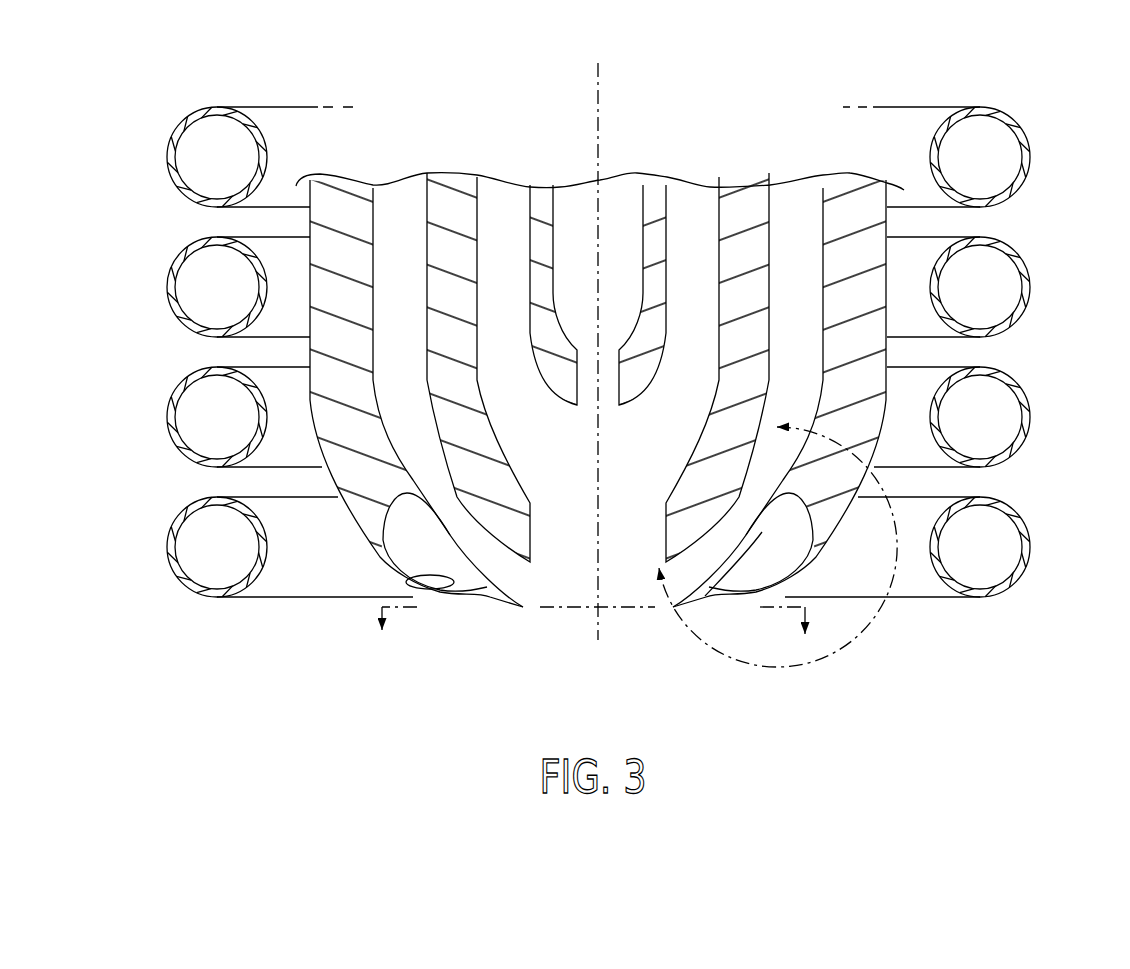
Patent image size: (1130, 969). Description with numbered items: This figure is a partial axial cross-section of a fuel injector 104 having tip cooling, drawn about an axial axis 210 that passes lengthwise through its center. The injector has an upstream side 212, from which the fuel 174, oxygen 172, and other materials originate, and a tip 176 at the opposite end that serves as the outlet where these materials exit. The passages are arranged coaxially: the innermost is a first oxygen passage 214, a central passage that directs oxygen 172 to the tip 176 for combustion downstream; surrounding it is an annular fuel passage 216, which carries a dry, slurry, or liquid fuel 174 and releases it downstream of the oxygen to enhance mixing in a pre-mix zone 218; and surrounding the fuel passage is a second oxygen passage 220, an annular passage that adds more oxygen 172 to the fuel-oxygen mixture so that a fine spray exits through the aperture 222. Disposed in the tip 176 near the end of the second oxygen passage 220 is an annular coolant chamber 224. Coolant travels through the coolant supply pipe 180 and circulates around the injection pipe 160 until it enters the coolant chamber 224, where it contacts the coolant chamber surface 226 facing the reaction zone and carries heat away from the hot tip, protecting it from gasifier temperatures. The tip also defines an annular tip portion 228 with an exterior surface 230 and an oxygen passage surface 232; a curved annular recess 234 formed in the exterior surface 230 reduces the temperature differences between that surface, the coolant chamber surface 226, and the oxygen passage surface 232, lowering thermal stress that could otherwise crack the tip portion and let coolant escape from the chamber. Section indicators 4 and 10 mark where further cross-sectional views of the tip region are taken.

The section view 4 indicator 4 is at (760, 529).
The section view 10 indicator 10 is at (593, 633).
The fuel injector 104 is at (803, 75).
The injection pipe 160 is at (218, 70).
The oxygen 172 is at (617, 204).
The fuel 174 is at (692, 219).
The tip 176 is at (1080, 311).
The coolant supply pipe 180 is at (1030, 150).
The axial axis 210 is at (602, 118).
The upstream side 212 is at (555, 89).
The first oxygen passage 214 is at (543, 193).
The fuel passage 216 is at (453, 182).
The pre-mix zone 218 is at (571, 484).
The second oxygen passage 220 is at (340, 200).
The aperture 222 is at (613, 613).
The annular coolant chamber 224 is at (780, 572).
The coolant chamber surface 226 is at (445, 578).
The annular tip portion 228 is at (386, 722).
The exterior surface 230 is at (450, 600).
The oxygen passage surface 232 is at (690, 588).
The annular recess 234 is at (487, 606).